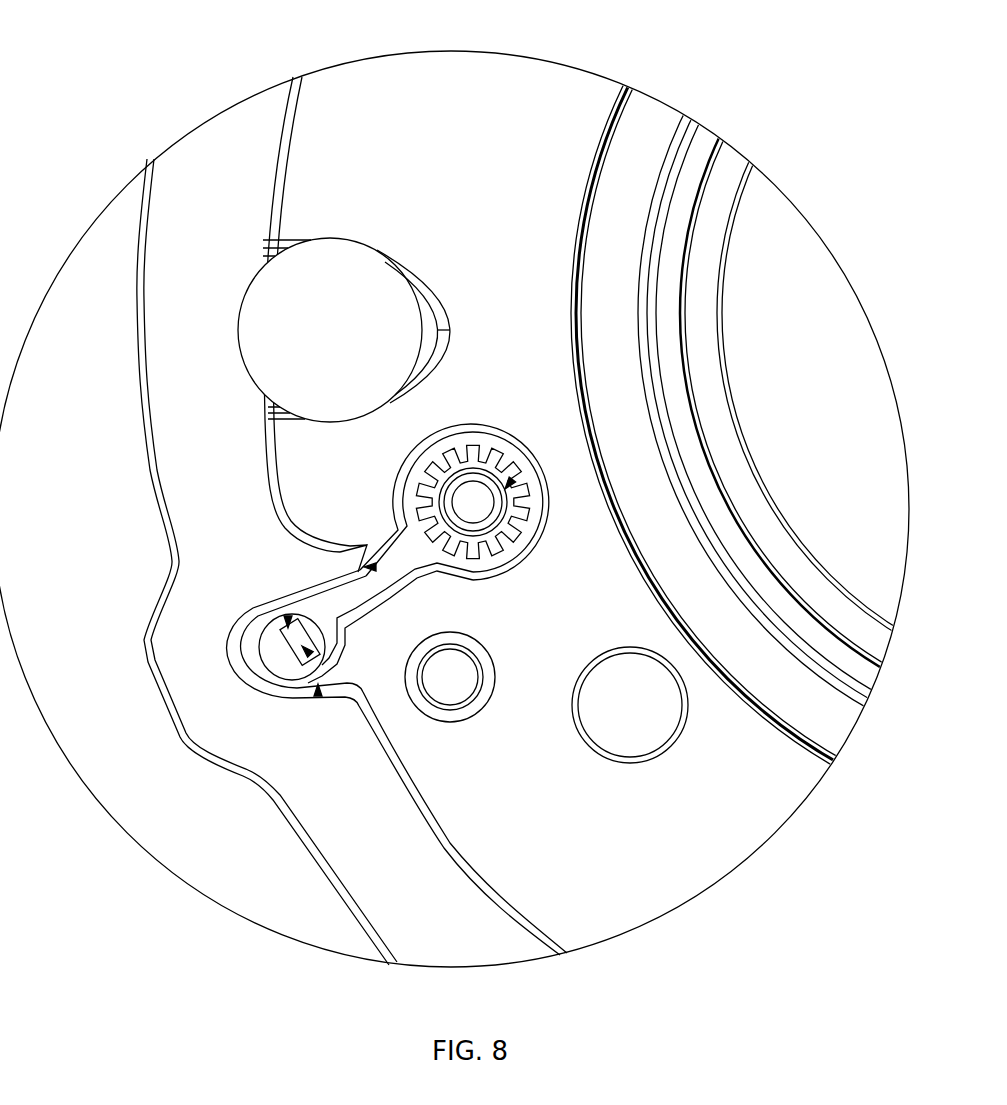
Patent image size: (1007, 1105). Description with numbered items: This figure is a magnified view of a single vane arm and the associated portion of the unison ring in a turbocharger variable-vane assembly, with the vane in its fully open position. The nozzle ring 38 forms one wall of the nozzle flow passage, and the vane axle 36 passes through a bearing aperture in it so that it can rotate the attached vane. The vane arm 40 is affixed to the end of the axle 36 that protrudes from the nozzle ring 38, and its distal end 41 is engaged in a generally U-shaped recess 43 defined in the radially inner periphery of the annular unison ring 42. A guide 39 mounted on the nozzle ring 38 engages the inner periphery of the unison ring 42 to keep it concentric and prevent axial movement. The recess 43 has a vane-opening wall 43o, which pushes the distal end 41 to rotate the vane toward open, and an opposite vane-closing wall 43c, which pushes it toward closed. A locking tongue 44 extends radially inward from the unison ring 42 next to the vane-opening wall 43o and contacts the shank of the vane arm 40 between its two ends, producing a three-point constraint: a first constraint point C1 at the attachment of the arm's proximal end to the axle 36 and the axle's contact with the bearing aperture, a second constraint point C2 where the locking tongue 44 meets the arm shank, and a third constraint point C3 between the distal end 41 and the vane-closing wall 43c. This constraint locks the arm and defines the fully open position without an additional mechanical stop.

The unison ring 42 is at (233, 122).
The nozzle ring 38 is at (387, 123).
The guide 39 is at (319, 341).
The axle 36 is at (474, 473).
The first constraint point C1 is at (506, 488).
The locking tongue 44 is at (347, 557).
The vane arm 40 is at (380, 583).
The recess 43 is at (228, 655).
The vane-closing wall 43c is at (304, 649).
The vane-opening wall 43o is at (288, 618).
The second constraint point C2 is at (375, 567).
The distal end 41 is at (260, 678).
The third constraint point C3 is at (318, 695).